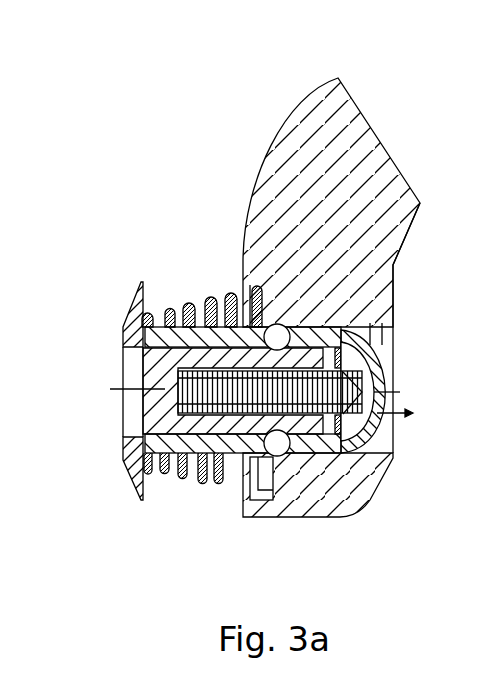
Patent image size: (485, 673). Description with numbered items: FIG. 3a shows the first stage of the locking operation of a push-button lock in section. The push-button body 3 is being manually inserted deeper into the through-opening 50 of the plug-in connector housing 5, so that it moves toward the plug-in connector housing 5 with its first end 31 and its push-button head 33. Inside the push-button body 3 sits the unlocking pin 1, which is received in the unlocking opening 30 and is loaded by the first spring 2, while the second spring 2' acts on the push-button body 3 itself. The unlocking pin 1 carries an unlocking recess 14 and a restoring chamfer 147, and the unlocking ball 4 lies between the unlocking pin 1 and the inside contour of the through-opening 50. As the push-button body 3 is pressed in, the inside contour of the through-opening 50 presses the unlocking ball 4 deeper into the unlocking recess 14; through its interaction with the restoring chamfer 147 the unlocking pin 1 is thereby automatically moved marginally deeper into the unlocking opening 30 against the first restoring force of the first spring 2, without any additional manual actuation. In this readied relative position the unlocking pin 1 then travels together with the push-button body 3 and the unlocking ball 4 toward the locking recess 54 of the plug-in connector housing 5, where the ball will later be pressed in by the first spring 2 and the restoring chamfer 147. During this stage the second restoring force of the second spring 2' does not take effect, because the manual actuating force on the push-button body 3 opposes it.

The plug-in connector housing 5 is at (276, 127).
The locking recess 54 is at (380, 322).
The first spring 2 is at (196, 240).
The second spring 2' is at (141, 263).
The push-button head 33 is at (130, 308).
The unlocking pin 1 is at (140, 372).
The first end 31 is at (140, 402).
The unlocking opening 30 is at (130, 420).
The push-button body 3 is at (126, 469).
The unlocking recess 14 is at (228, 456).
The unlocking ball 4 is at (277, 448).
The restoring chamfer 147 is at (350, 445).
The through-opening 50 is at (398, 457).